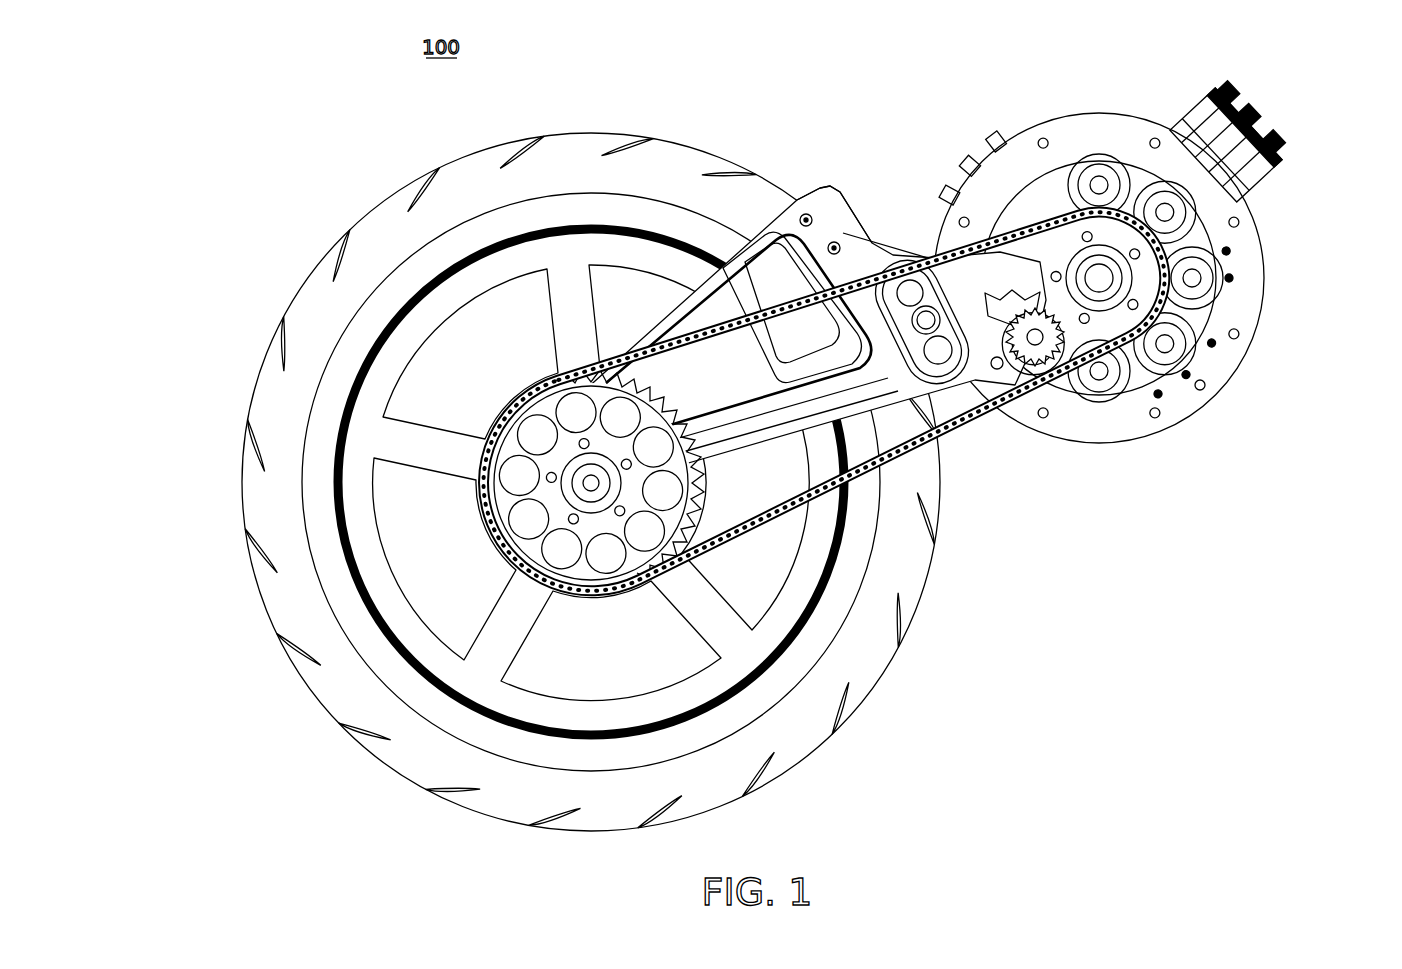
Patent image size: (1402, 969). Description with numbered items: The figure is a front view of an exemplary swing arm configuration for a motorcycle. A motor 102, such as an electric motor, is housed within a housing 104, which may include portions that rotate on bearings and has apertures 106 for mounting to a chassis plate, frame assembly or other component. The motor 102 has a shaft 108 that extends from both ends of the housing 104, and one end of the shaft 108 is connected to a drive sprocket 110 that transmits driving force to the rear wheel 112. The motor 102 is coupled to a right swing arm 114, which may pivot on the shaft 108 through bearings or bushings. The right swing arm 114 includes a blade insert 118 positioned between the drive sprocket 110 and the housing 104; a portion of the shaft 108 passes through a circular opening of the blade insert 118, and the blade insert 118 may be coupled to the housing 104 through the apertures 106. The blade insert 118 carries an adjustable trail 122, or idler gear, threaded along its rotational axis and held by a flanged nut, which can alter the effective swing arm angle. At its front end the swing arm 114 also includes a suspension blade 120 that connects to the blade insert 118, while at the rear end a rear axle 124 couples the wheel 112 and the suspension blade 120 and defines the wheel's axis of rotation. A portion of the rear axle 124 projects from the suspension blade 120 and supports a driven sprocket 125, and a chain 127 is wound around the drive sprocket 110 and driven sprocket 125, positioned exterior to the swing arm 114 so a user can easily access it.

The motor 102 is at (1197, 278).
The housing 104 is at (1126, 442).
The apertures 106 is at (1200, 386).
The shaft 108 is at (1103, 270).
The drive sprocket 110 is at (1063, 247).
The rear wheel 112 is at (337, 385).
The right swing arm 114 is at (898, 371).
The blade insert 118 is at (1020, 373).
The suspension blade 120 is at (807, 200).
The adjustable trail 122 is at (1047, 347).
The rear axle 124 is at (591, 481).
The driven sprocket 125 is at (510, 440).
The chain 127 is at (477, 503).